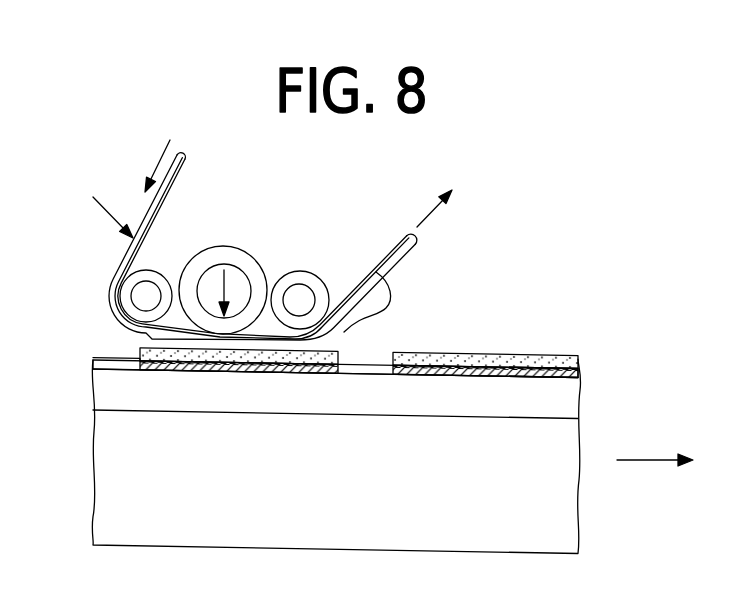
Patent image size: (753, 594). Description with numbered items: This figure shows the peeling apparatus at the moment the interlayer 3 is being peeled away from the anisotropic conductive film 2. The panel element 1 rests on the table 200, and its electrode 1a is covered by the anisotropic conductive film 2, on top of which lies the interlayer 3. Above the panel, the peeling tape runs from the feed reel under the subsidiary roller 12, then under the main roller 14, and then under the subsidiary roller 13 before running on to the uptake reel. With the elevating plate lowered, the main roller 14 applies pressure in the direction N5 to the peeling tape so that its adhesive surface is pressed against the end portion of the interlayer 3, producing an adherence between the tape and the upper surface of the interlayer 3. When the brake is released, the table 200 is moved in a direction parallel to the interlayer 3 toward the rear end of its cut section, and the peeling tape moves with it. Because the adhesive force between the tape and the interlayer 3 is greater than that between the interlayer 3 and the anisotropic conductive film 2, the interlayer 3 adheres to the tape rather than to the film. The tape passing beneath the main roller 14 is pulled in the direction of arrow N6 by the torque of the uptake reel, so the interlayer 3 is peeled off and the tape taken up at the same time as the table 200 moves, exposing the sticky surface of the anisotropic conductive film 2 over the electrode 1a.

The panel element 1 is at (565, 403).
The electrode 1a is at (570, 372).
The anisotropic conductive film 2 is at (140, 346).
The interlayer 3 is at (374, 305).
The subsidiary roller 12 is at (152, 273).
The subsidiary roller 13 is at (318, 277).
The main roller 14 is at (223, 245).
The table 200 is at (566, 521).
The direction of pressure N5 is at (226, 285).
The direction of tape pull N6 is at (290, 197).